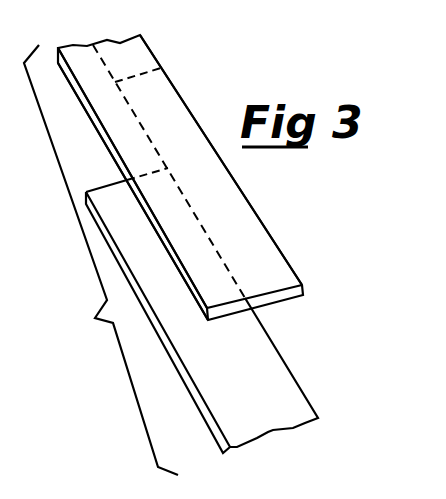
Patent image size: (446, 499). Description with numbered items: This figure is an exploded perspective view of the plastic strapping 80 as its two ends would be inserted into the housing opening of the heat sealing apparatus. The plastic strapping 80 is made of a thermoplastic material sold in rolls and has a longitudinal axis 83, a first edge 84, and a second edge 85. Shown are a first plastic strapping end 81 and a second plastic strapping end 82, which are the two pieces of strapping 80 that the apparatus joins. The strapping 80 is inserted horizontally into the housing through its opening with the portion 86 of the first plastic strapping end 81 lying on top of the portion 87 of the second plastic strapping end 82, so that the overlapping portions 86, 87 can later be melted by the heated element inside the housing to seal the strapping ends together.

The plastic strapping 80 is at (101, 260).
The first plastic strapping end 81 is at (275, 225).
The second plastic strapping end 82 is at (280, 353).
The longitudinal axis 83 is at (160, 64).
The first edge 84 is at (199, 128).
The second edge 85 is at (91, 118).
The portion of first plastic strapping end 86 is at (228, 212).
The portion of second plastic strapping end 87 is at (244, 378).